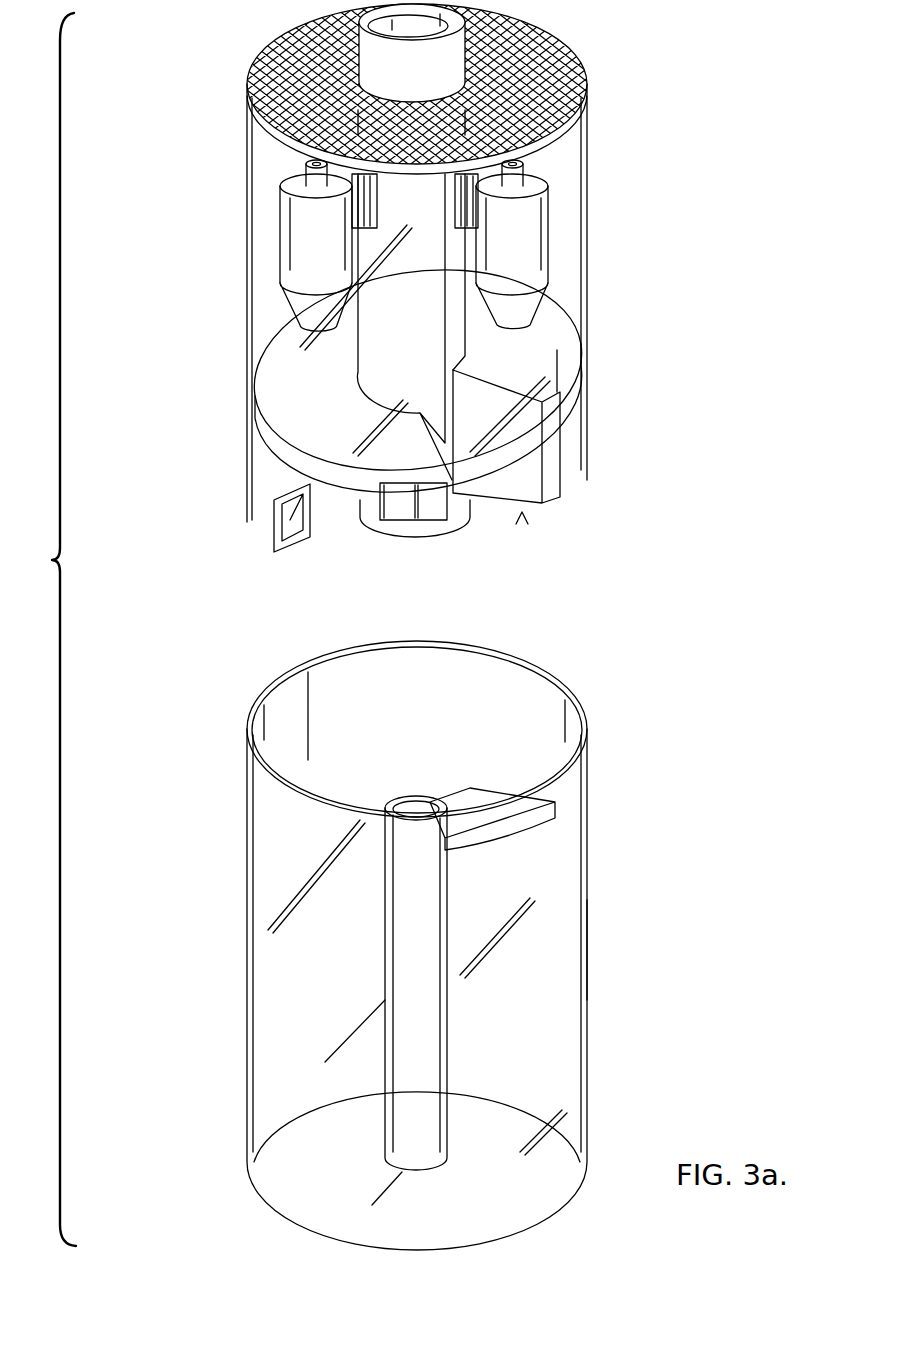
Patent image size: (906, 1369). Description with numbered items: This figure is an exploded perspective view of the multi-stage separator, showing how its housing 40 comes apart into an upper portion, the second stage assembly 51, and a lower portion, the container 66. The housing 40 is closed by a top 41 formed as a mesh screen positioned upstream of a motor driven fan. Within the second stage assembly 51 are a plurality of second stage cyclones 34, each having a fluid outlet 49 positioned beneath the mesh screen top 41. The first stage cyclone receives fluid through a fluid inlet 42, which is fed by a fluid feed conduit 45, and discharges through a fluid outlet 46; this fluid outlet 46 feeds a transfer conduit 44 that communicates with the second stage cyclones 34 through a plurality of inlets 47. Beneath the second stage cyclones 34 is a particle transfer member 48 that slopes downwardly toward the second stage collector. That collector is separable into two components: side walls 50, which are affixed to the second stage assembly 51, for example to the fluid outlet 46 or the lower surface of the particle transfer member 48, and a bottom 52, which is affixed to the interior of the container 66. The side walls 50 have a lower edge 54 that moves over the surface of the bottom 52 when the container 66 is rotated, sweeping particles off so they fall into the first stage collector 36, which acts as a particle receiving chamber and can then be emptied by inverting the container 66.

The housing 40 is at (48, 629).
The top 41 is at (565, 40).
The inlets 47 is at (468, 200).
The transfer conduit 44 is at (372, 370).
The second stage assembly 51 is at (252, 217).
The second stage cyclones 34 is at (545, 242).
The fluid outlet 49 is at (530, 172).
The particle transfer member 48 is at (270, 362).
The side walls 50 is at (560, 484).
The fluid outlet 46 is at (404, 538).
The fluid inlet 42 is at (292, 545).
The lower edge 54 is at (522, 512).
The first stage collector 36 is at (586, 1150).
The container 66 is at (588, 940).
The fluid feed conduit 45 is at (390, 910).
The bottom 52 is at (560, 826).